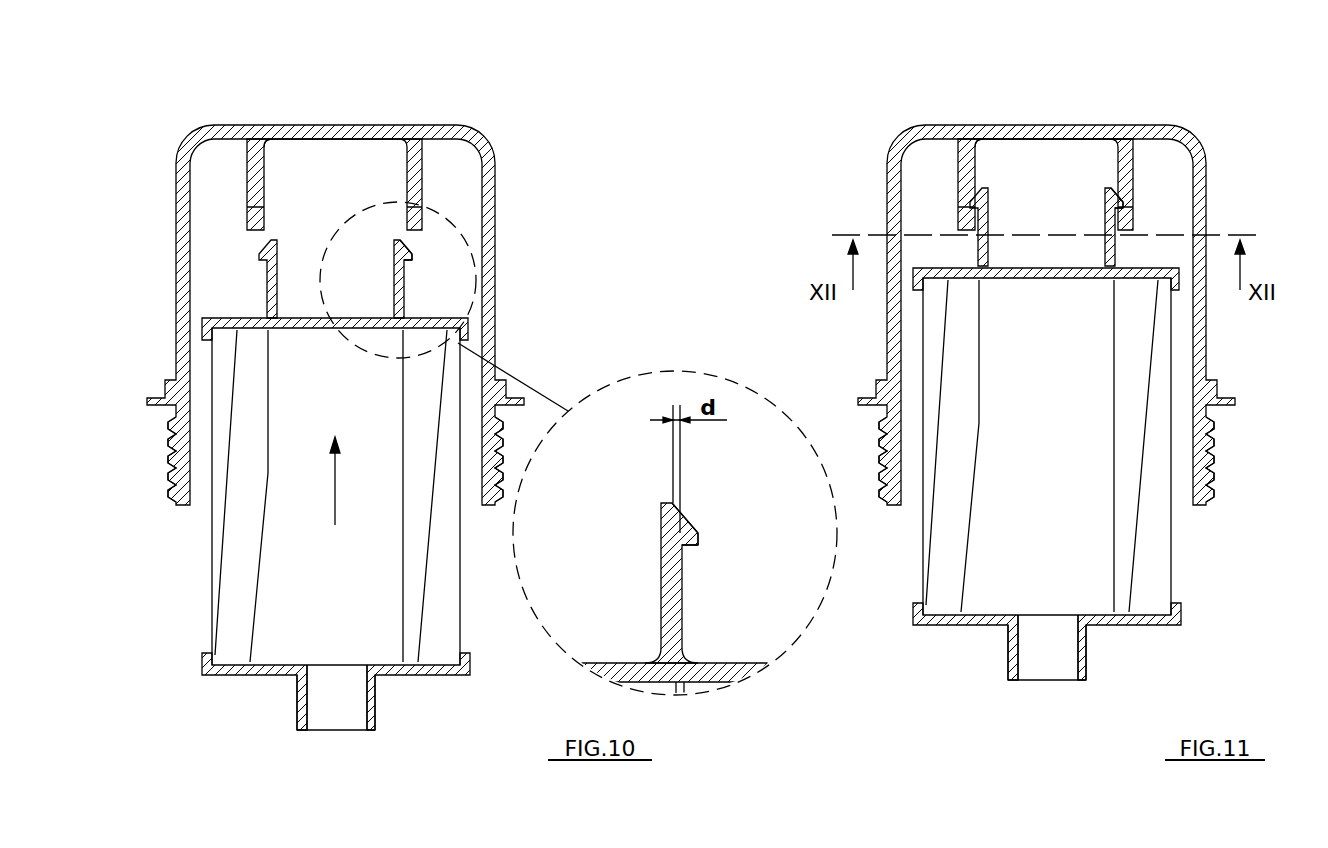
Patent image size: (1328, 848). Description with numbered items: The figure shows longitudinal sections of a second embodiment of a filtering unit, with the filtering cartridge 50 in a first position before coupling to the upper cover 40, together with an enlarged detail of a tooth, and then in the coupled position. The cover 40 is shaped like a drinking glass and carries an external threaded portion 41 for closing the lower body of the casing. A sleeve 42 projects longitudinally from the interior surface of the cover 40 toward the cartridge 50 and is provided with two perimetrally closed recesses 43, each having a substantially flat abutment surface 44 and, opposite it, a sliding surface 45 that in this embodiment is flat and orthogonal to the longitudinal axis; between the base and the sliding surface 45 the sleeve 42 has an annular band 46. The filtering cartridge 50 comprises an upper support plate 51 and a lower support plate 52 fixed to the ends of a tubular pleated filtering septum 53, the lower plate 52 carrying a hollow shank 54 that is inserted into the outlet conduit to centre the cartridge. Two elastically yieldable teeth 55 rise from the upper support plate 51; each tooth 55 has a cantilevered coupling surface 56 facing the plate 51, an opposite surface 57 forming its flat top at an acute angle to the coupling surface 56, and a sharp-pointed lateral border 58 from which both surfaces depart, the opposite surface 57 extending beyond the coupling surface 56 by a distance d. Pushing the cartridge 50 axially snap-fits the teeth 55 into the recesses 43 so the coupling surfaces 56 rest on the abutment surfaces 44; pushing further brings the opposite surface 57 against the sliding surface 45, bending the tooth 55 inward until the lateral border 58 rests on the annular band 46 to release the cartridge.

In FIG. 10, the upper cover 40 is at (176, 372).
In FIG. 11, the upper cover 40 is at (887, 378).
In FIG. 10, the external threaded portion 41 is at (176, 472).
In FIG. 11, the external threaded portion 41 is at (887, 472).
In FIG. 10, the sleeve 42 is at (422, 170).
In FIG. 11, the sleeve 42 is at (1135, 170).
In FIG. 10, the recess 43 is at (253, 205).
In FIG. 11, the recess 43 is at (965, 205).
In FIG. 10, the abutment surface 44 is at (250, 212).
In FIG. 11, the abutment surface 44 is at (962, 212).
In FIG. 10, the sliding surface 45 is at (270, 200).
In FIG. 11, the sliding surface 45 is at (980, 200).
In FIG. 10, the annular band 46 is at (398, 175).
In FIG. 11, the annular band 46 is at (1110, 175).
In FIG. 10, the filtering cartridge 50 is at (200, 714).
In FIG. 11, the filtering cartridge 50 is at (910, 664).
In FIG. 10, the upper support plate 51 is at (462, 330).
In FIG. 11, the upper support plate 51 is at (1176, 280).
In FIG. 10, the lower support plate 52 is at (205, 668).
In FIG. 11, the lower support plate 52 is at (915, 618).
In FIG. 10, the filtering septum 53 is at (256, 533).
In FIG. 11, the filtering septum 53 is at (967, 481).
In FIG. 10, the hollow shank 54 is at (305, 732).
In FIG. 11, the hollow shank 54 is at (1020, 682).
In FIG. 10, the tooth 55 is at (394, 265).
In FIG. 11, the tooth 55 is at (1108, 220).
In FIG. 10, the coupling surface 56 is at (412, 266).
In FIG. 11, the coupling surface 56 is at (1122, 228).
In FIG. 10, the opposite surface 57 is at (412, 250).
In FIG. 11, the opposite surface 57 is at (1125, 205).
In FIG. 10, the lateral border 58 is at (413, 257).
In FIG. 11, the lateral border 58 is at (1125, 212).